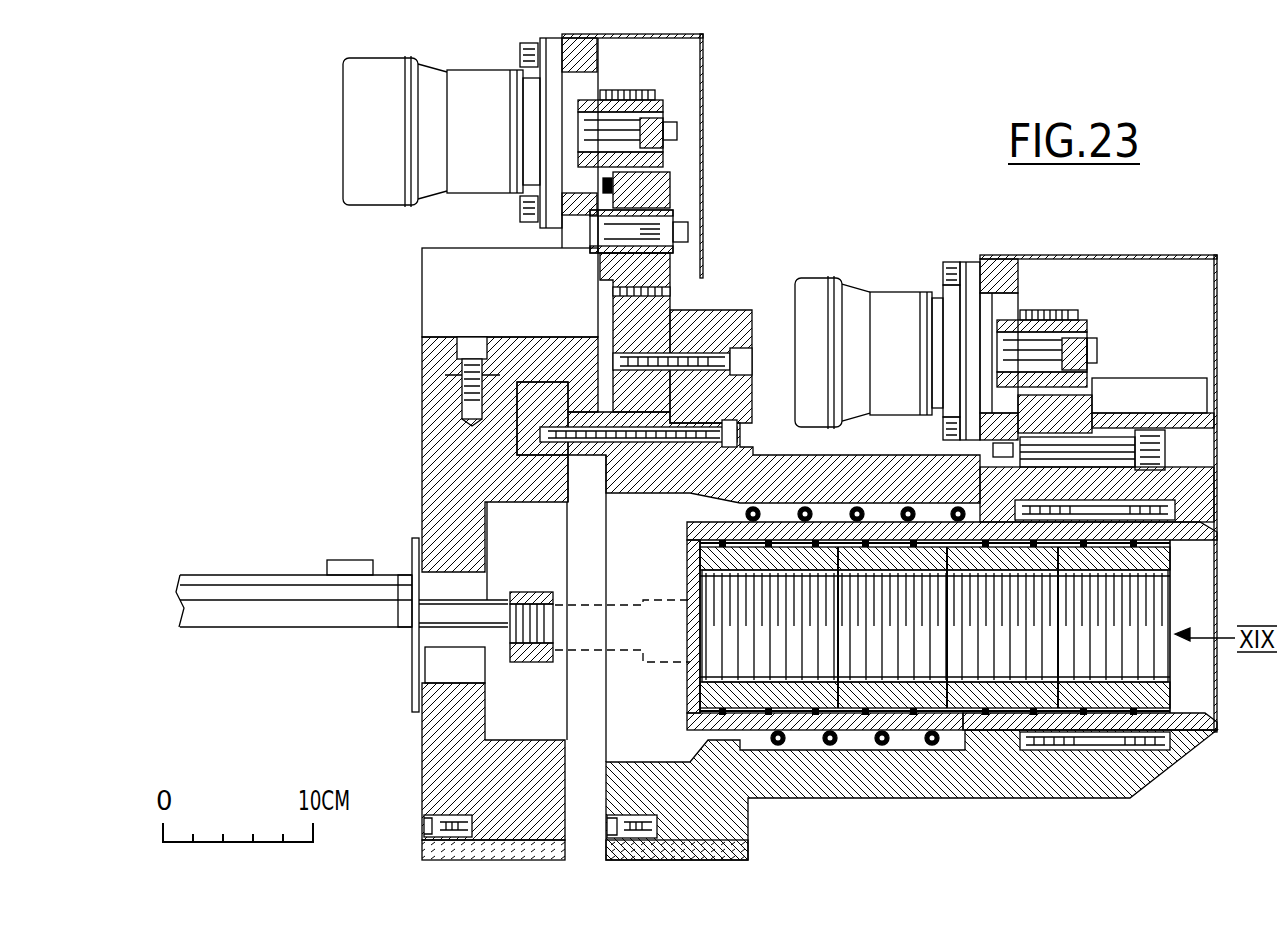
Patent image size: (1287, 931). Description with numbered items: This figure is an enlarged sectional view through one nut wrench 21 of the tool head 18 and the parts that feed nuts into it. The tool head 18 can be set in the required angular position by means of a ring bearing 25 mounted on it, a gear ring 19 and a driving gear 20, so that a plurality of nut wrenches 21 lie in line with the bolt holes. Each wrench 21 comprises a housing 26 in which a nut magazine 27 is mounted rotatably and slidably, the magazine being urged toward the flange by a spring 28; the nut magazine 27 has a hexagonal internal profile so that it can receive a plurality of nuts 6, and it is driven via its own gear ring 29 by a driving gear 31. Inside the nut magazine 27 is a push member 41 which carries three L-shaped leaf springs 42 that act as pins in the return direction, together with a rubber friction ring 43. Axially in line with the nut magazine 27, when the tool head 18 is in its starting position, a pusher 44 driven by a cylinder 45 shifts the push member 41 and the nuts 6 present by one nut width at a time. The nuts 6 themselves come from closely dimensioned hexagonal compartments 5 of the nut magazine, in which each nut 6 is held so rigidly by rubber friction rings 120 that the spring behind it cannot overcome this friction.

The compartment 5 is at (1197, 687).
The nut 6 is at (880, 596).
The tool head 18 is at (737, 320).
The gear ring 19 is at (668, 302).
The driving gear 20 is at (705, 138).
The nut wrench 21 is at (1180, 787).
The ring bearing 25 is at (590, 465).
The housing 26 is at (878, 780).
The nut magazine 27 is at (985, 740).
The spring 28 is at (787, 755).
The gear ring 29 is at (1160, 496).
The driving gear 31 is at (1106, 355).
The push member 41 is at (712, 690).
The L-shaped leaf spring 42 is at (688, 548).
The rubber friction ring 43 is at (705, 712).
The pusher 44 is at (550, 568).
The cylinder 45 is at (310, 661).
The rubber friction ring 120 is at (1135, 547).